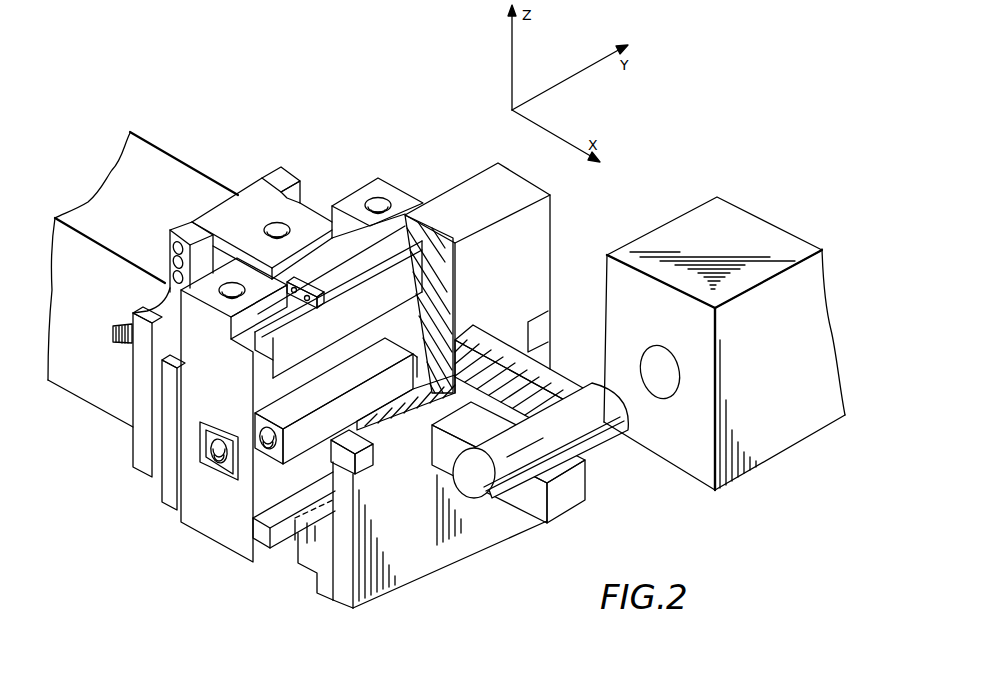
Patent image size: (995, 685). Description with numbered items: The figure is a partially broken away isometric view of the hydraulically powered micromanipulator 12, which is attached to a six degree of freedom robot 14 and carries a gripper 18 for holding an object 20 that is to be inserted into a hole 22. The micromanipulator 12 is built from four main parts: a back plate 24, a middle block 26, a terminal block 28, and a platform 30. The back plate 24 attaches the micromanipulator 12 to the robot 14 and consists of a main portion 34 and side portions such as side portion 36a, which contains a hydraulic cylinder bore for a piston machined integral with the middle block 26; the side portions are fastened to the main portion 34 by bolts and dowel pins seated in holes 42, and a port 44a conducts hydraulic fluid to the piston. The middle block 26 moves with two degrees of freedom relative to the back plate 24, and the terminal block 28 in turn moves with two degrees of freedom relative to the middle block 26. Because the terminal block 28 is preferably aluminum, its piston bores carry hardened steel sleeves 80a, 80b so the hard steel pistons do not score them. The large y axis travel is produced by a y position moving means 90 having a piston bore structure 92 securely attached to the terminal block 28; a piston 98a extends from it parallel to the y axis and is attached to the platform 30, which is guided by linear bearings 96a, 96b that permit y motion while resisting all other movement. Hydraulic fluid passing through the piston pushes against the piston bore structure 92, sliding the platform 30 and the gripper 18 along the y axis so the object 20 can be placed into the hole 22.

The micromanipulator 12 is at (313, 106).
The robot 14 is at (141, 128).
The gripper 18 is at (567, 508).
The object 20 is at (596, 446).
The hole 22 is at (663, 362).
The back plate 24 is at (147, 447).
The middle block 26 is at (167, 483).
The terminal block 28 is at (219, 530).
The platform 30 is at (406, 556).
The main portion 34 is at (279, 182).
The side portion 36a is at (241, 196).
The holes 42 is at (172, 276).
The port 44a is at (290, 228).
The hardened steel sleeve 80a is at (233, 297).
The hardened steel sleeve 80b is at (386, 202).
The y position moving means 90 is at (349, 368).
The piston bore structure 92 is at (294, 441).
The linear bearing 96a is at (374, 290).
The linear bearing 96b is at (285, 556).
The piston 98a is at (431, 334).